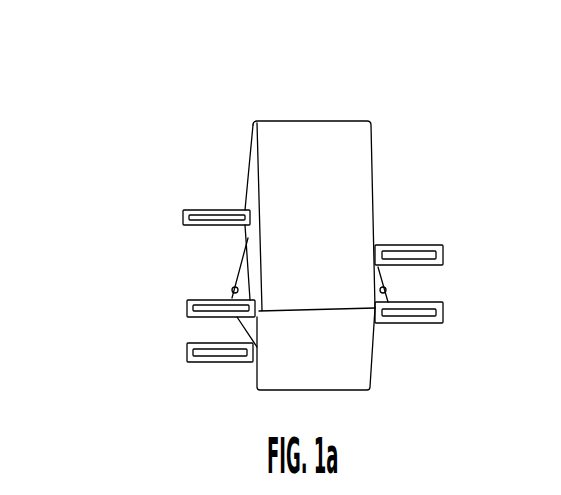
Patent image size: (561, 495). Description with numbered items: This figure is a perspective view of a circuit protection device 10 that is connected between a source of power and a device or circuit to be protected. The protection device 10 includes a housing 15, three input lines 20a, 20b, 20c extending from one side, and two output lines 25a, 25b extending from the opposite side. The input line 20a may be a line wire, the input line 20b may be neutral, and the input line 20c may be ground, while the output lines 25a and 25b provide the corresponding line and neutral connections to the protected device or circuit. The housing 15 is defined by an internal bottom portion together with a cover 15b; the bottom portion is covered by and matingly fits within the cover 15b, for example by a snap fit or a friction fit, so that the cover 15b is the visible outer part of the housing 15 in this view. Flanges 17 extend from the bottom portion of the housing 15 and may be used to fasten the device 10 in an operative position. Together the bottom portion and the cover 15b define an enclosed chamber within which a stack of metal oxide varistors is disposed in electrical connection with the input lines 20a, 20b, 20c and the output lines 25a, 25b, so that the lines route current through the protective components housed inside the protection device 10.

The circuit protection device 10 is at (235, 97).
The housing 15 is at (285, 120).
The cover 15b is at (328, 177).
The flanges 17 is at (237, 277).
The input line 20a is at (183, 212).
The input line 20b is at (186, 306).
The input line 20c is at (186, 353).
The output line 25a is at (446, 256).
The output line 25b is at (432, 328).